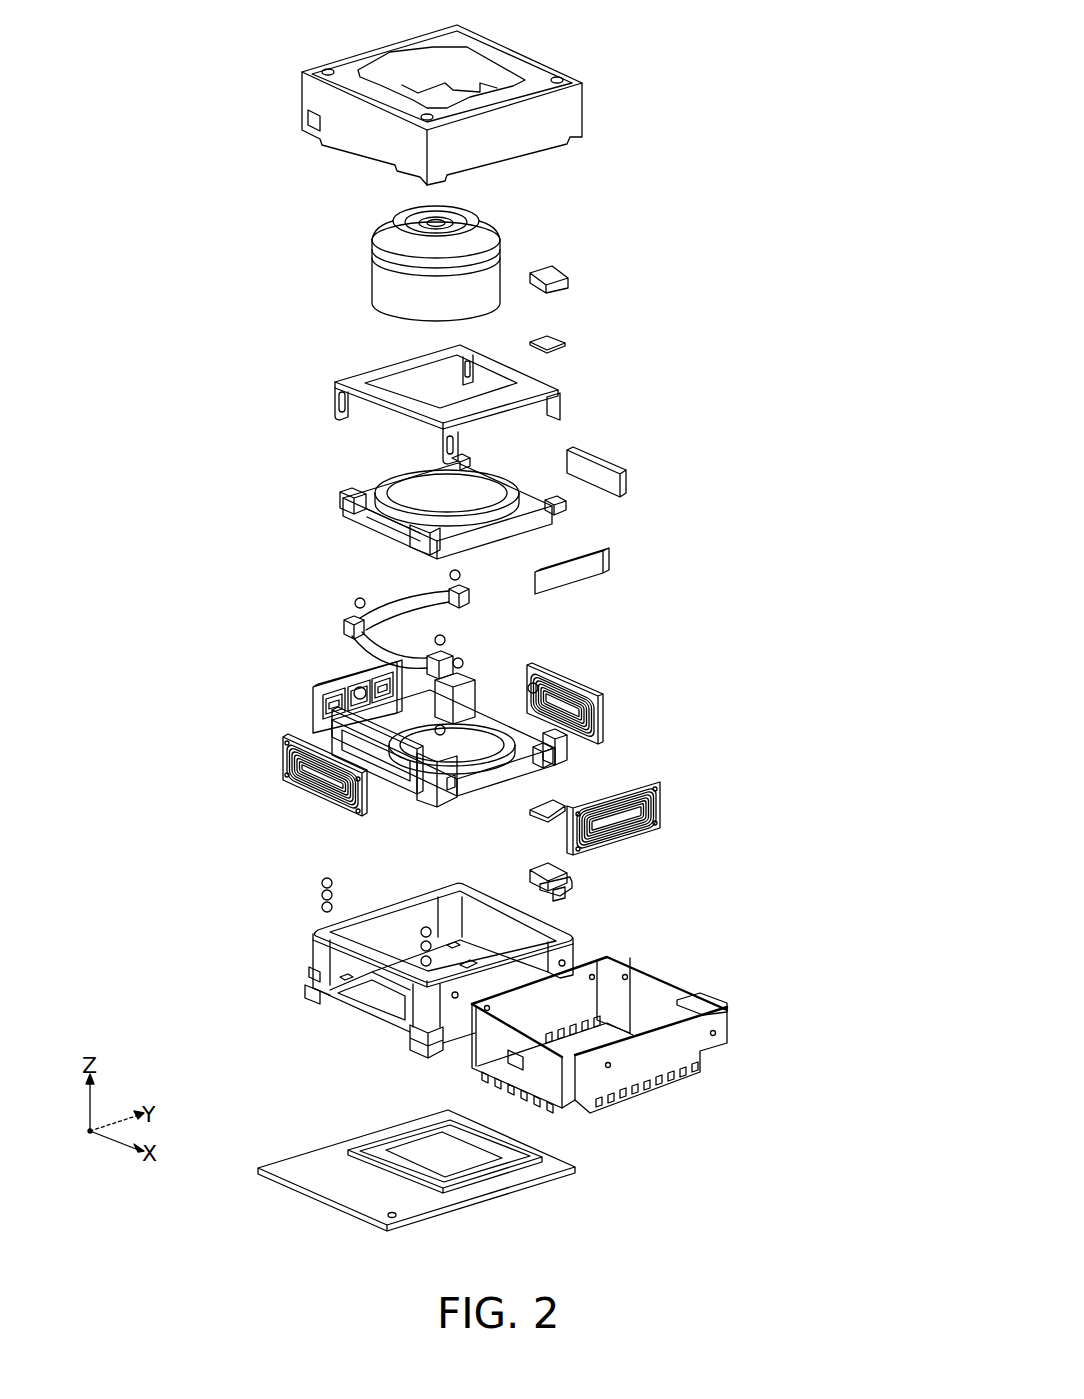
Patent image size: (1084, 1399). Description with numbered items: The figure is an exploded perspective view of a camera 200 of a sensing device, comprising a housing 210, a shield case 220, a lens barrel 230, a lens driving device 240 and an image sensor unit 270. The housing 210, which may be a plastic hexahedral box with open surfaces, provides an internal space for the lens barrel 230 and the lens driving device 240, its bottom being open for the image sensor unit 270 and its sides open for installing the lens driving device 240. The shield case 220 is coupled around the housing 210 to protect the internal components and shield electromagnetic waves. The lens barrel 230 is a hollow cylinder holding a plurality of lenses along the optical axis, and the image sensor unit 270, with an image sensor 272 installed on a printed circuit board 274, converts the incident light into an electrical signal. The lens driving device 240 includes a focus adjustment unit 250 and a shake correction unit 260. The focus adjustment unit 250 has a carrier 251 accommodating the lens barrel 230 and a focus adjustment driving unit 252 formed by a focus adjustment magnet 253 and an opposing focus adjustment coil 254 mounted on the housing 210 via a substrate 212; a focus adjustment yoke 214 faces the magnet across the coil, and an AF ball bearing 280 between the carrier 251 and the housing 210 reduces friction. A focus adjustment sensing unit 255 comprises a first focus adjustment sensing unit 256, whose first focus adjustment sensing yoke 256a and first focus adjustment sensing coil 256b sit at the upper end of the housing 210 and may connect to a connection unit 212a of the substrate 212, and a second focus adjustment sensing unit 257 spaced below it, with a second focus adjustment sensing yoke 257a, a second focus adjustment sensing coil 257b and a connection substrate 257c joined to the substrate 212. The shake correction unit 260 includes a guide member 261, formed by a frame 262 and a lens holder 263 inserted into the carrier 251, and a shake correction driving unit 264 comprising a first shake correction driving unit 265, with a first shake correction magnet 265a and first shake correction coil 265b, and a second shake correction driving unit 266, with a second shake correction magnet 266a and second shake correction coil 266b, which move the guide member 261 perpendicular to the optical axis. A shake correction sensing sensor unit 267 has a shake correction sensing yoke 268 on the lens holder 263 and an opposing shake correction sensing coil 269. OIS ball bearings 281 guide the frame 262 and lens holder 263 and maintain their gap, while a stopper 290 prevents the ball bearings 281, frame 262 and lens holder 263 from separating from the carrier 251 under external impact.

The camera 200 is at (230, 25).
The housing 210 is at (342, 1008).
The substrate 212 is at (642, 1060).
The connection unit 212a is at (700, 1000).
The focus adjustment yoke 214 is at (546, 1080).
The shield case 220 is at (570, 118).
The lens barrel 230 is at (378, 280).
The lens driving device 240 is at (147, 732).
The focus adjustment unit 250 is at (247, 756).
The carrier 251 is at (433, 780).
The focus adjustment driving unit 252 is at (248, 816).
The focus adjustment magnet 253 is at (380, 762).
The focus adjustment coil 254 is at (348, 768).
The focus adjustment sensing unit 255 is at (862, 887).
The first focus adjustment sensing unit 256 is at (793, 265).
The first focus adjustment sensing yoke 256a is at (558, 341).
The first focus adjustment sensing coil 256b is at (560, 274).
The second focus adjustment sensing unit 257 is at (793, 862).
The second focus adjustment sensing yoke 257a is at (583, 817).
The second focus adjustment sensing coil 257b is at (568, 873).
The connection substrate 257c is at (570, 894).
The shake correction unit 260 is at (356, 465).
The guide member 261 is at (198, 613).
The frame 262 is at (355, 626).
The lens holder 263 is at (445, 585).
The shake correction driving unit 264 is at (787, 577).
The first shake correction driving unit 265 is at (727, 677).
The first shake correction magnet 265a is at (578, 697).
The first shake correction coil 265b is at (660, 812).
The second shake correction driving unit 266 is at (728, 508).
The second shake correction magnet 266a is at (628, 490).
The second shake correction coil 266b is at (575, 574).
The shake correction sensing sensor unit 267 is at (238, 380).
The shake correction sensing yoke 268 is at (385, 515).
The shake correction sensing coil 269 is at (373, 497).
The image sensor unit 270 is at (240, 1073).
The image sensor 272 is at (335, 1180).
The printed circuit board 274 is at (425, 1150).
The AF ball bearing 280 is at (318, 979).
The OIS ball bearings 281 is at (458, 660).
The stopper 290 is at (363, 374).